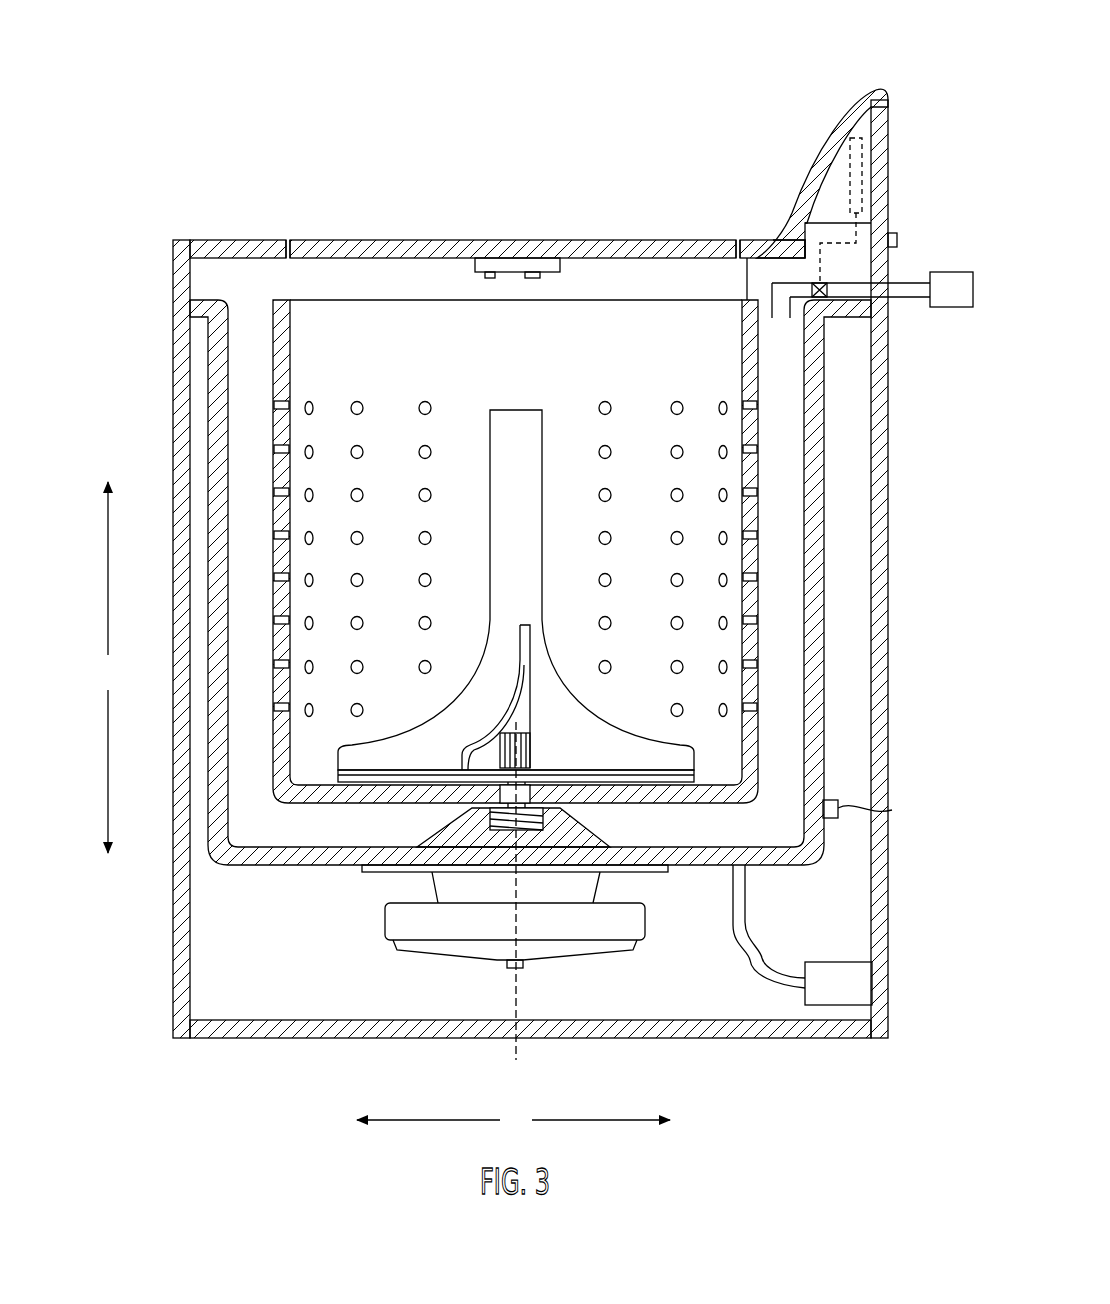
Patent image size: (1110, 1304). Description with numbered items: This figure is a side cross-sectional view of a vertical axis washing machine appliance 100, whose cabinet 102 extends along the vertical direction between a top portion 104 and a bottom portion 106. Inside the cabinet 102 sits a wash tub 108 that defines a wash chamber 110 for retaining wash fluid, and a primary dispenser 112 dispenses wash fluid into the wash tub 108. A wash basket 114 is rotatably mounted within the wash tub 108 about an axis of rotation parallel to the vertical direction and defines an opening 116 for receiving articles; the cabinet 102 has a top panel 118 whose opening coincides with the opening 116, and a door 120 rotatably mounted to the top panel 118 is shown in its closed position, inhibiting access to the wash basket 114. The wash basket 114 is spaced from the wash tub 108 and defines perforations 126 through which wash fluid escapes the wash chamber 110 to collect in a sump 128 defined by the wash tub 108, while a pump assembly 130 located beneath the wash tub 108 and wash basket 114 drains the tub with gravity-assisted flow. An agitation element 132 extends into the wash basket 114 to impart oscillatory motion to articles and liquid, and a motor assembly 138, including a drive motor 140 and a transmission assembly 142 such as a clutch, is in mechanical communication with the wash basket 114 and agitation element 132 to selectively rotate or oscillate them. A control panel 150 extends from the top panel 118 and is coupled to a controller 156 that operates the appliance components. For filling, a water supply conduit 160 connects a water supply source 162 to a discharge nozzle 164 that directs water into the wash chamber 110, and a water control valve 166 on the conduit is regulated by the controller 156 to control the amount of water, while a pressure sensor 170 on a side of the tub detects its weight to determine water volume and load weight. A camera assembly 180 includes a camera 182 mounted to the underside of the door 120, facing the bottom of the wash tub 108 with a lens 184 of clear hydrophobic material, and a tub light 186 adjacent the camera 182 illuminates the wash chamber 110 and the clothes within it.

The washing machine appliance 100 is at (215, 122).
The cabinet 102 is at (182, 385).
The top portion 104 is at (163, 250).
The bottom portion 106 is at (170, 1035).
The wash tub 108 is at (815, 707).
The wash chamber 110 is at (250, 518).
The primary dispenser 112 is at (760, 275).
The wash basket 114 is at (273, 328).
The opening 116 is at (603, 296).
The top panel 118 is at (216, 240).
The door 120 is at (402, 238).
The perforations 126 is at (430, 408).
The sump 128 is at (340, 838).
The pump assembly 130 is at (783, 990).
The agitation element 132 is at (517, 410).
The motor assembly 138 is at (355, 912).
The drive motor 140 is at (638, 925).
The transmission assembly 142 is at (578, 870).
The control panel 150 is at (825, 140).
The controller 156 is at (872, 150).
The water supply conduit 160 is at (910, 298).
The water supply source 162 is at (970, 304).
The discharge nozzle 164 is at (781, 320).
The water control valve 166 is at (825, 290).
The pressure sensor 170 is at (892, 812).
The camera assembly 180 is at (511, 255).
The camera 182 is at (560, 276).
The lens 184 is at (536, 282).
The tub light 186 is at (493, 280).